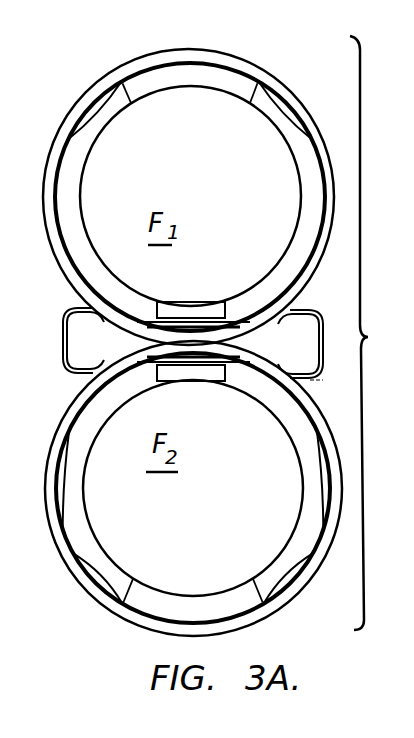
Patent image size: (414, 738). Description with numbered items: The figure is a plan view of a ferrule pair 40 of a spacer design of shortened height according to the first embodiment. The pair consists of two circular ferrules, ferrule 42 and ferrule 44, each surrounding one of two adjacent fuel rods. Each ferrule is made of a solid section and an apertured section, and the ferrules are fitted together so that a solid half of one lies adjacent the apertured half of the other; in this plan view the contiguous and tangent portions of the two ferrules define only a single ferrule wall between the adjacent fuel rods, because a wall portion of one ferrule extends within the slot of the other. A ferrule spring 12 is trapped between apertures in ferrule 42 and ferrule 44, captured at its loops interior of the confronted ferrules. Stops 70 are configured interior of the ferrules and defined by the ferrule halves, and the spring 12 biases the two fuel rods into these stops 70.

The ferrule spring 12 is at (313, 312).
The ferrule pair 40 is at (380, 333).
The ferrule 42 is at (235, 57).
The ferrule 44 is at (125, 619).
The stops 70 is at (114, 121).